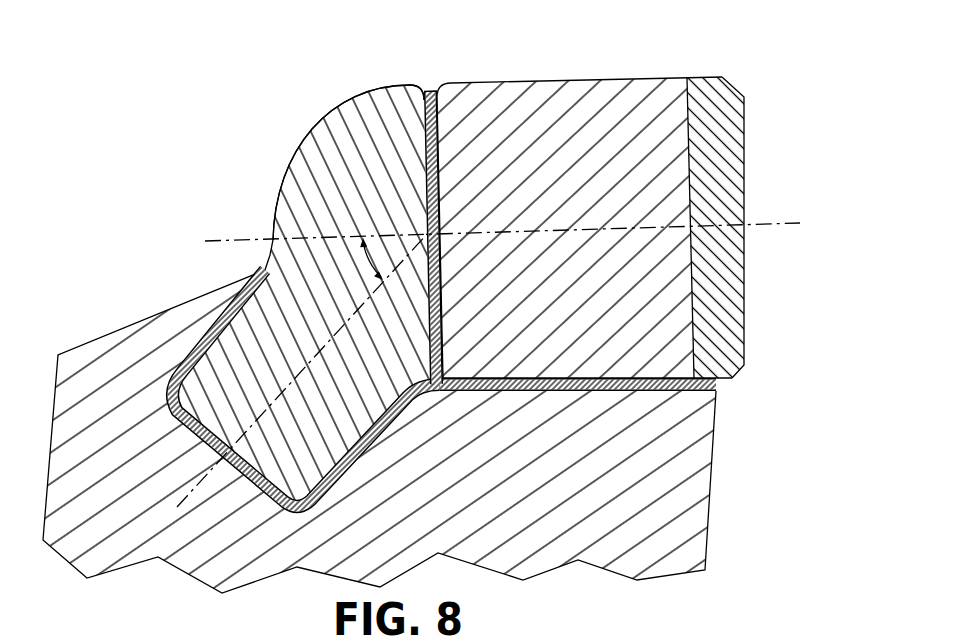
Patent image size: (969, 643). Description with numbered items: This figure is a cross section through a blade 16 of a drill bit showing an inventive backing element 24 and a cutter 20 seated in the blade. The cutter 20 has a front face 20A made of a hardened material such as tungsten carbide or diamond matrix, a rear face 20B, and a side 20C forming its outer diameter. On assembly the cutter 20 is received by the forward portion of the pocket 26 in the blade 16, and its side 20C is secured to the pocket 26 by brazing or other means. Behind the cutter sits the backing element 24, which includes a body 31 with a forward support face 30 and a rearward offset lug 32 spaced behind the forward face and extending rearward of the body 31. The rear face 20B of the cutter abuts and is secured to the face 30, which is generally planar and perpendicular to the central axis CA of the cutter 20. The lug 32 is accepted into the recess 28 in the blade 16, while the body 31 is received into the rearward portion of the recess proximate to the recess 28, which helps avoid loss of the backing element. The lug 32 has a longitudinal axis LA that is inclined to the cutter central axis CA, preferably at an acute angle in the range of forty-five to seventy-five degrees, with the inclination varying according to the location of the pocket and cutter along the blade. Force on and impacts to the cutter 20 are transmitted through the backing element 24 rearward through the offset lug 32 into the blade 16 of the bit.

The blade 16 is at (714, 458).
The cutter 20 is at (484, 321).
The front face 20A is at (746, 257).
The rear face 20B is at (441, 180).
The side 20C is at (563, 378).
The backing element 24 is at (290, 159).
The pocket 26 is at (517, 393).
The recess 28 is at (346, 478).
The forward support face 30 is at (428, 213).
The body 31 is at (341, 101).
The rearward offset lug 32 is at (233, 386).
The central axis CA is at (776, 223).
The longitudinal axis LA is at (202, 478).